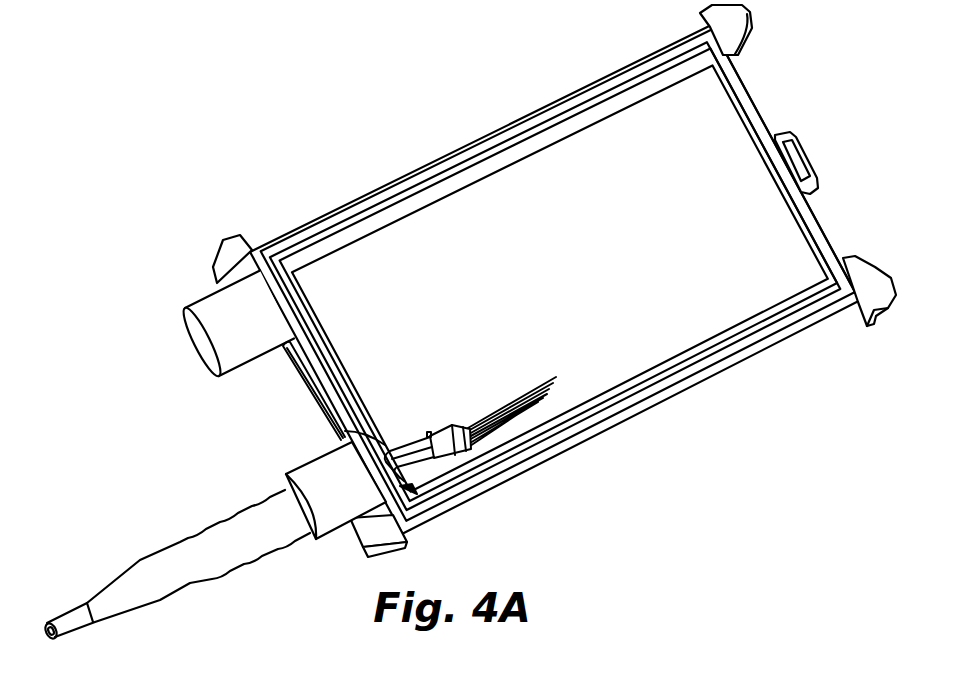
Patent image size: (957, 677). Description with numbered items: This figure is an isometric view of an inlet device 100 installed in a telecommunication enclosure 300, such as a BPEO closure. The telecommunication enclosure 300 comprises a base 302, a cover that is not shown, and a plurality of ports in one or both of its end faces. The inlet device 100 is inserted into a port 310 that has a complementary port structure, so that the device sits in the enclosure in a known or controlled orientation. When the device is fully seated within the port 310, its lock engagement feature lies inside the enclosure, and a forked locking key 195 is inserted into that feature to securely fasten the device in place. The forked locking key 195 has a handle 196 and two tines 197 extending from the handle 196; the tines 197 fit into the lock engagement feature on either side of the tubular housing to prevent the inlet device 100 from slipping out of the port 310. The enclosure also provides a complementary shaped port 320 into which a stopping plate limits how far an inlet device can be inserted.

The inlet device 100 is at (214, 541).
The forked locking key 195 is at (416, 496).
The handle 196 is at (455, 466).
The tines 197 is at (345, 431).
The telecommunication enclosure 300 is at (554, 281).
The base 302 is at (350, 220).
The port 310 is at (325, 530).
The complementary shaped port 320 is at (305, 393).